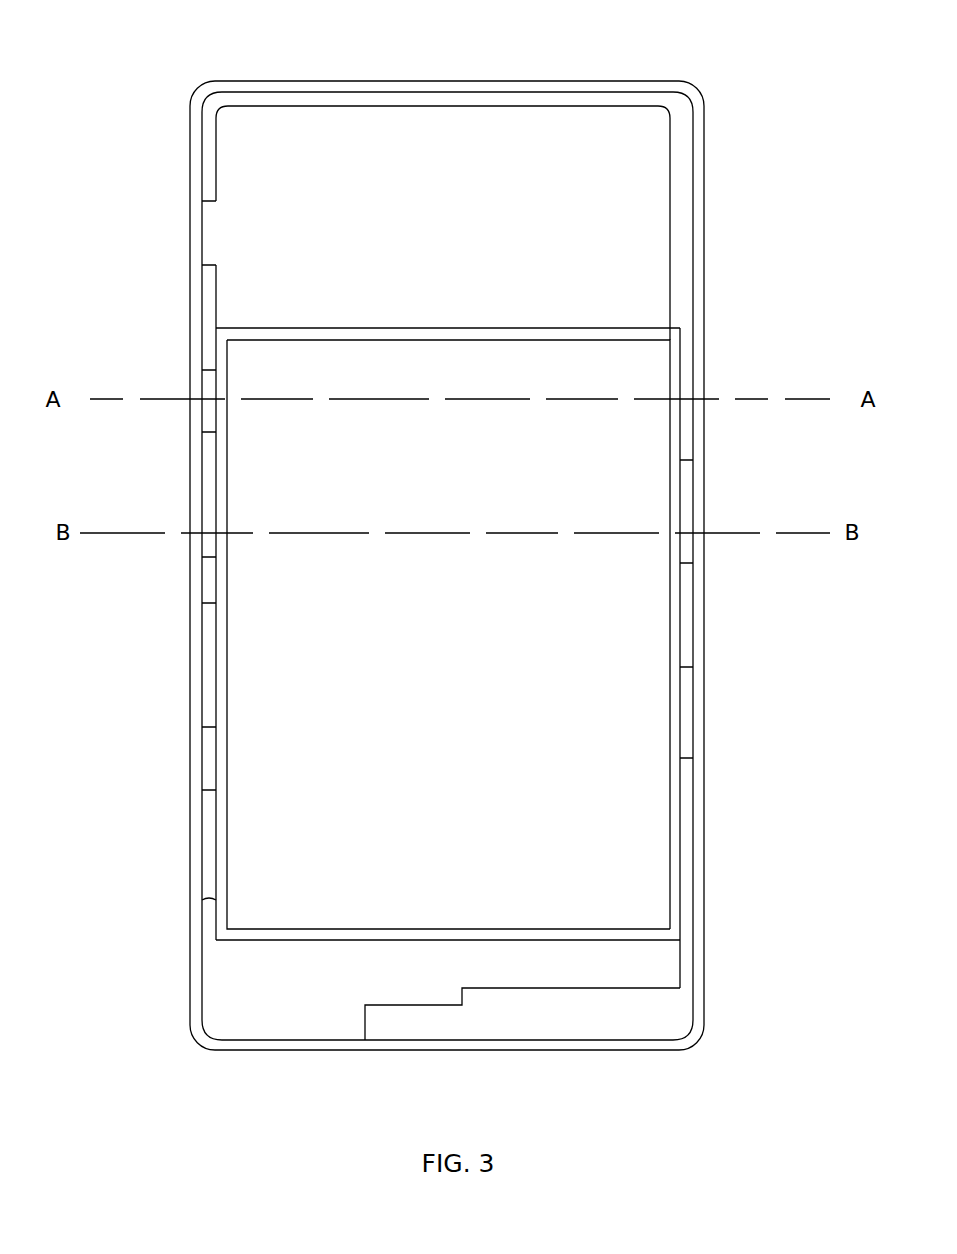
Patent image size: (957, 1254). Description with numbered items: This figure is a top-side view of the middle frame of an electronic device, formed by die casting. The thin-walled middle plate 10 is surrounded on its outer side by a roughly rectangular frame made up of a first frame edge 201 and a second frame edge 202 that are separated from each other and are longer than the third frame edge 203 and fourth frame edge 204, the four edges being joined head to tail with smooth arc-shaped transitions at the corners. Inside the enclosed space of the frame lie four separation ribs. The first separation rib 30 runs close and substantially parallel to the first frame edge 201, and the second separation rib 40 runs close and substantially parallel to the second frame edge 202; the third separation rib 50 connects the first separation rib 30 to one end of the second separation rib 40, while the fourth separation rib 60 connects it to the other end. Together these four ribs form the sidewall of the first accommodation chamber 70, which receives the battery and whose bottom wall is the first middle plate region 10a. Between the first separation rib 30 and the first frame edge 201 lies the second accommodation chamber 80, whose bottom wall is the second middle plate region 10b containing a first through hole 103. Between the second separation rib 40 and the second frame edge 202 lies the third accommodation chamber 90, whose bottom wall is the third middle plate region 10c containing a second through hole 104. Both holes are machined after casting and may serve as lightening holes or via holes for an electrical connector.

The middle plate 10 is at (412, 158).
The first middle plate region 10a is at (647, 360).
The second middle plate region 10b is at (688, 548).
The third middle plate region 10c is at (207, 387).
The first separation rib 30 is at (672, 392).
The second separation rib 40 is at (218, 413).
The third separation rib 50 is at (405, 330).
The fourth separation rib 60 is at (345, 937).
The first accommodation chamber 70 is at (282, 566).
The second accommodation chamber 80 is at (683, 518).
The third accommodation chamber 90 is at (212, 583).
The first through hole 103 is at (690, 437).
The second through hole 104 is at (205, 360).
The first frame edge 201 is at (700, 280).
The second frame edge 202 is at (195, 312).
The third frame edge 203 is at (505, 85).
The fourth frame edge 204 is at (325, 1043).